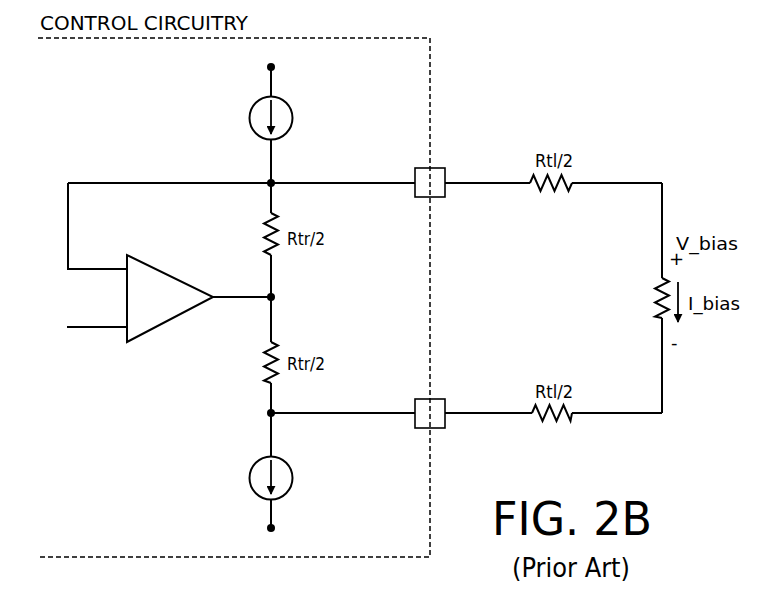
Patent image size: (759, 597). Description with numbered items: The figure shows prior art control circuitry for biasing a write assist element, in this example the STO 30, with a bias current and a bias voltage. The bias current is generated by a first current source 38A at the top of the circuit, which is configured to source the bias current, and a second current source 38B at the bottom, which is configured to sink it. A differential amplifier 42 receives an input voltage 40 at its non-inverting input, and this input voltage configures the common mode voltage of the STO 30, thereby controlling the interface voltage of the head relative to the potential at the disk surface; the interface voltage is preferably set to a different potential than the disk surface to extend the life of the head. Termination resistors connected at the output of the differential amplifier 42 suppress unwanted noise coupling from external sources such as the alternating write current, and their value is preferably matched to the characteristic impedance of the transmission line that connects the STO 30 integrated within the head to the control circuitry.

The first current source 38A is at (296, 102).
The second current source 38B is at (296, 489).
The input voltage Vivc 40 is at (87, 329).
The differential amplifier 42 is at (177, 320).
The STO 30 is at (648, 318).